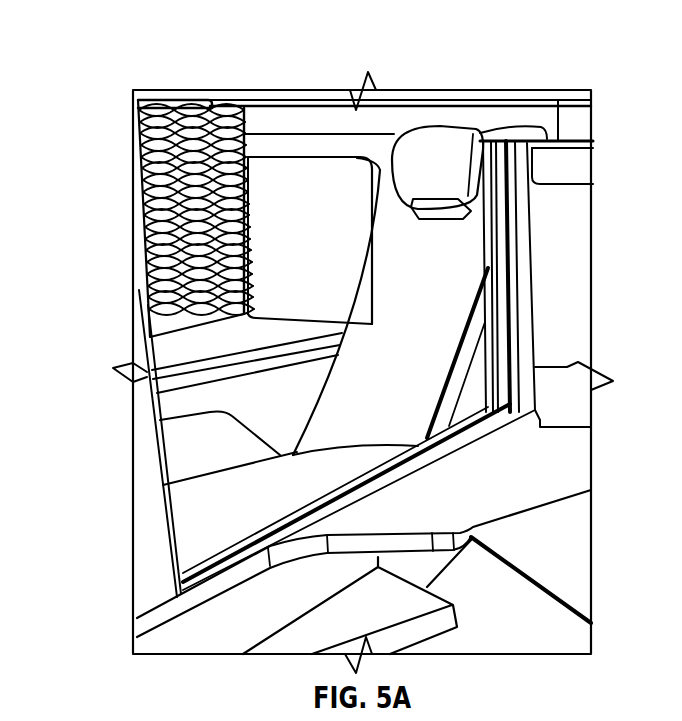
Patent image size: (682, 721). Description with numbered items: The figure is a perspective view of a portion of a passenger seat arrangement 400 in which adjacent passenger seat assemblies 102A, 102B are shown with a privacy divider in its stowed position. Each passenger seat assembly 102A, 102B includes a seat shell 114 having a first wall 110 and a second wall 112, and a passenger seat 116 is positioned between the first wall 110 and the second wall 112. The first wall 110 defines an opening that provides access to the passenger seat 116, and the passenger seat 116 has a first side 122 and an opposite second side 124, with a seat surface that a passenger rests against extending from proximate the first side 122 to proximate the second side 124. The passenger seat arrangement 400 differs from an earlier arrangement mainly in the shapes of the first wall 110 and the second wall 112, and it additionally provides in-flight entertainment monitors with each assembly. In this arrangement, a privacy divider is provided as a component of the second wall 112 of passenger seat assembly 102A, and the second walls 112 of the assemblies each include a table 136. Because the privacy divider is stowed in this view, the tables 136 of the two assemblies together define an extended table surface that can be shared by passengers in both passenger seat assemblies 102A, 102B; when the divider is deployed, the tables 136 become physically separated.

The passenger seat arrangement 400 is at (114, 177).
The passenger seat assembly 102A is at (293, 113).
The passenger seat assembly 102B is at (173, 643).
The first wall 110 is at (134, 135).
The second wall 112 is at (484, 133).
The seat shell 114 is at (403, 123).
The passenger seat 116 is at (357, 310).
The first side 122 is at (380, 243).
The second side 124 is at (454, 383).
The table 136 is at (227, 493).